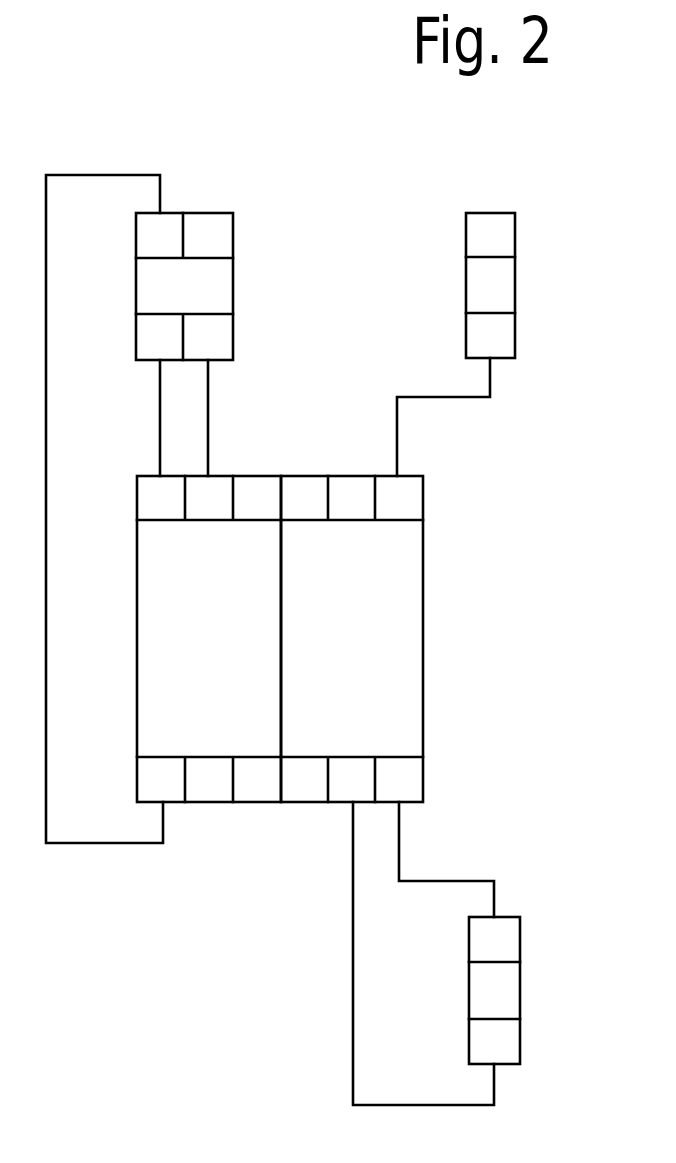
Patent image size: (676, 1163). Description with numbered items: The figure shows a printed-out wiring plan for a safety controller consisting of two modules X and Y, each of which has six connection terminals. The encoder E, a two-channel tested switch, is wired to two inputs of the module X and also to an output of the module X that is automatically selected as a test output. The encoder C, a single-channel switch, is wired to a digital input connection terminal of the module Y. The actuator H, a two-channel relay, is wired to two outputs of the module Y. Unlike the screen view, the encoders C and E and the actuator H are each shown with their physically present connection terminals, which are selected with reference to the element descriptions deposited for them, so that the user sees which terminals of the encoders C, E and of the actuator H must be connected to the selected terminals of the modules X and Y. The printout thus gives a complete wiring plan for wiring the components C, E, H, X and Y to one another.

The encoder E is at (184, 286).
The encoder C is at (490, 285).
The module X is at (209, 639).
The module Y is at (352, 639).
The actuator H is at (494, 990).